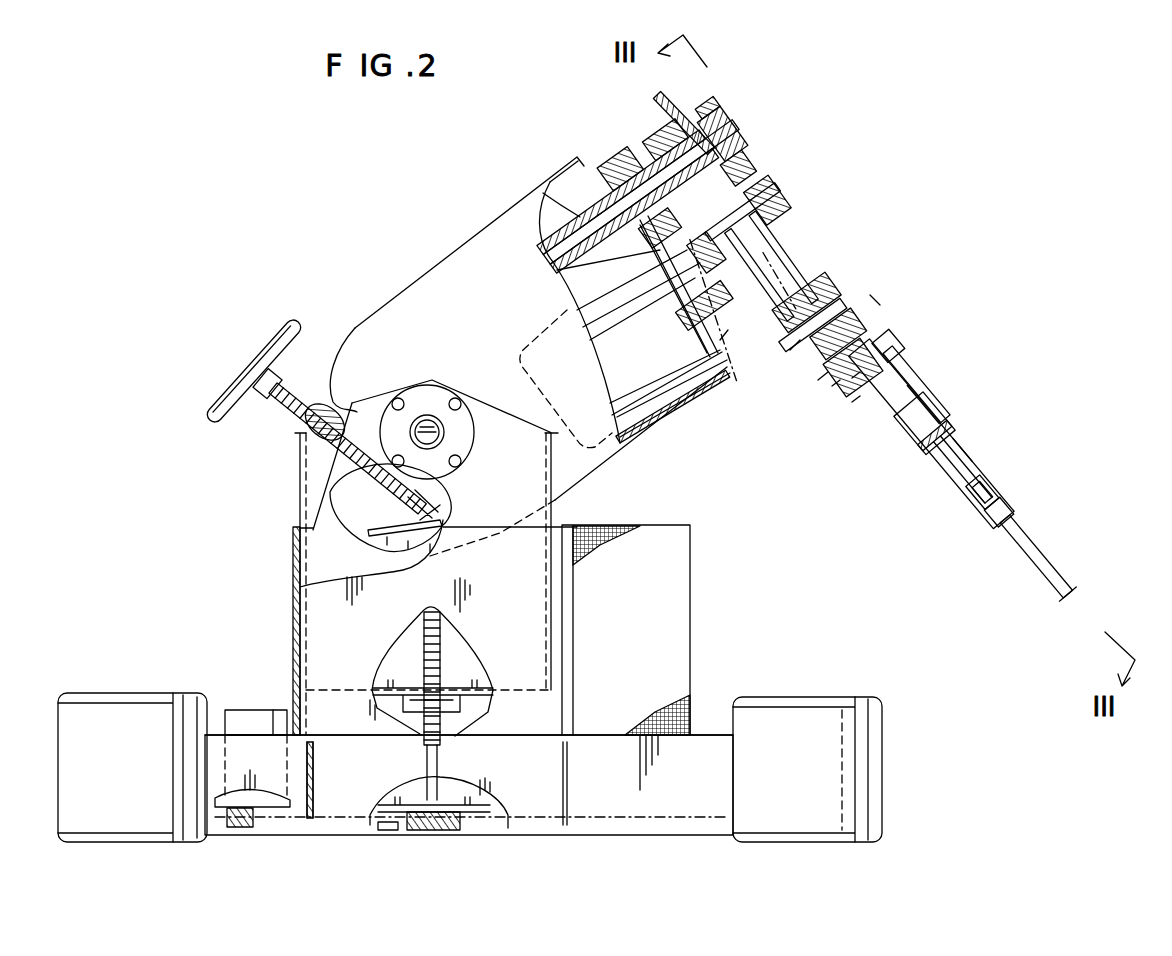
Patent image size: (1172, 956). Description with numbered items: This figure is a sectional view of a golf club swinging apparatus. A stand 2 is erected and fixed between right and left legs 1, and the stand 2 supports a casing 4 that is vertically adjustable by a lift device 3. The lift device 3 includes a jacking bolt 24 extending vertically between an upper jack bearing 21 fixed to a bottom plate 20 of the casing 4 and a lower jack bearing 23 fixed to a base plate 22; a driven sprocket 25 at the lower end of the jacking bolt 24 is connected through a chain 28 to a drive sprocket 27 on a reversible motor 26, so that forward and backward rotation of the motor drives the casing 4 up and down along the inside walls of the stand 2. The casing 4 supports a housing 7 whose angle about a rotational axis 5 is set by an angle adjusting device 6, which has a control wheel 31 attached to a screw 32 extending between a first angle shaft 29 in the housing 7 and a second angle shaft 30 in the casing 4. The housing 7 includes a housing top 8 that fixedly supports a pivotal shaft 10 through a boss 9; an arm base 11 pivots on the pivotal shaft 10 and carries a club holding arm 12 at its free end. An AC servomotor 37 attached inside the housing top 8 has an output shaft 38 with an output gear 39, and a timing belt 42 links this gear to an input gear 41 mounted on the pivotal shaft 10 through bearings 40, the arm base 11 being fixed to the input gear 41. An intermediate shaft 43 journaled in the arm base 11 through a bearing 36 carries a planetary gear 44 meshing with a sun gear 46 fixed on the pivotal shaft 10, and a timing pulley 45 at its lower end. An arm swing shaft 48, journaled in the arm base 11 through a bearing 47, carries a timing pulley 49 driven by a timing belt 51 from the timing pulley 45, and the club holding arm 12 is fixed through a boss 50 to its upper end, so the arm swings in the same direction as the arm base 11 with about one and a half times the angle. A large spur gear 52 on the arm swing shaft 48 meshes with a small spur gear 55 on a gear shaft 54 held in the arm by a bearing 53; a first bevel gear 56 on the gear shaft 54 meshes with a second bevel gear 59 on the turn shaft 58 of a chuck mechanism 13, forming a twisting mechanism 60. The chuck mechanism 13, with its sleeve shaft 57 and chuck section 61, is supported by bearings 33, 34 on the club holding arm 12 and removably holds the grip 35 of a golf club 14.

The legs 1 is at (628, 812).
The stand 2 is at (296, 632).
The lift device 3 is at (340, 838).
The casing 4 is at (442, 388).
The rotational axis 5 is at (446, 432).
The angle adjusting device 6 is at (283, 486).
The housing 7 is at (497, 222).
The housing top 8 is at (585, 160).
The boss 9 is at (553, 215).
The pivotal shaft 10 is at (735, 130).
The arm base 11 is at (668, 112).
The club holding arm 12 is at (893, 406).
The chuck mechanism 13 is at (1000, 418).
The golf club 14 is at (1048, 542).
The bottom plate 20 is at (402, 662).
The upper jack bearing 21 is at (470, 700).
The base plate 22 is at (504, 798).
The lower jack bearing 23 is at (452, 792).
The jacking bolt 24 is at (447, 622).
The driven sprocket 25 is at (440, 831).
The reversible motor 26 is at (248, 712).
The drive sprocket 27 is at (255, 818).
The chain 28 is at (393, 828).
The first angle shaft 29 is at (400, 513).
The second angle shaft 30 is at (308, 446).
The control wheel 31 is at (224, 404).
The screw 32 is at (298, 390).
The bearing 33 is at (900, 332).
The bearing 34 is at (935, 406).
The grip 35 is at (1010, 506).
The bearing 36 is at (740, 165).
The AC servomotor 37 is at (680, 395).
The output shaft 38 is at (673, 318).
The output gear 39 is at (720, 322).
The bearings 40 is at (656, 146).
The input gear 41 is at (613, 160).
The timing belt 42 is at (657, 282).
The intermediate shaft 43 is at (775, 210).
The planetary gear 44 is at (780, 205).
The timing pulley 45 is at (760, 270).
The sun gear 46 is at (710, 116).
The bearing 47 is at (840, 365).
The arm swing shaft 48 is at (845, 300).
The timing pulley 49 is at (790, 350).
The boss 50 is at (835, 295).
The timing belt 51 is at (722, 342).
The spur gear 52 is at (820, 380).
The bearing 53 is at (855, 382).
The gear shaft 54 is at (835, 386).
The spur gear 55 is at (855, 402).
The first bevel gear 56 is at (906, 352).
The sleeve shaft 57 is at (958, 422).
The turn shaft 58 is at (930, 372).
The second bevel gear 59 is at (880, 326).
The twisting mechanism 60 is at (882, 290).
The chuck section 61 is at (956, 498).